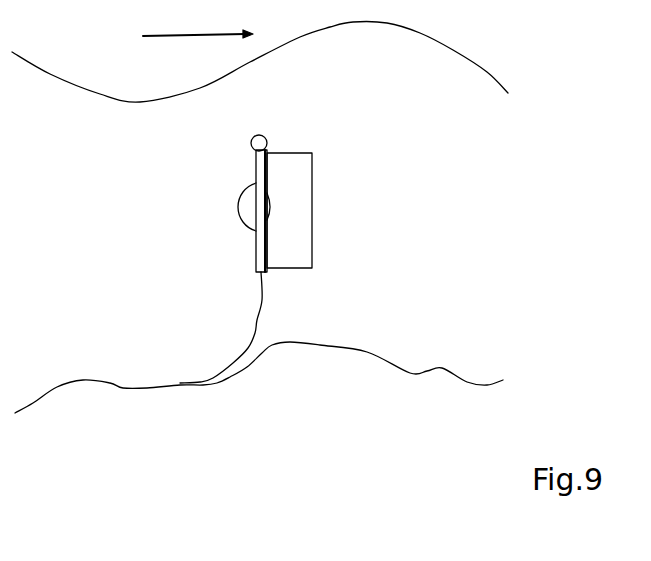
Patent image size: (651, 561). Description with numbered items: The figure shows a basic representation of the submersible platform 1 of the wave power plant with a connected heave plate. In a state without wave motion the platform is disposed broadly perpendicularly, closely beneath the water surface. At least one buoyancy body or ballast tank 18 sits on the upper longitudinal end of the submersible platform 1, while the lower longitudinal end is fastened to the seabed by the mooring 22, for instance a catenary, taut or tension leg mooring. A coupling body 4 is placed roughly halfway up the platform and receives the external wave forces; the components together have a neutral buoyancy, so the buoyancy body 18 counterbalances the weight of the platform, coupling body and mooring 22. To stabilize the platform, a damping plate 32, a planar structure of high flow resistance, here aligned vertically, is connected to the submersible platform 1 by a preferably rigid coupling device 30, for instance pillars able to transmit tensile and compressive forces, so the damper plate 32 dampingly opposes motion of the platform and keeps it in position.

The submersible platform 1 is at (282, 236).
The coupling body 4 is at (237, 193).
The buoyancy body/ballast tank 18 is at (268, 140).
The mooring 22 is at (245, 348).
The coupling device 30 is at (293, 150).
The damping plate 32 is at (312, 180).